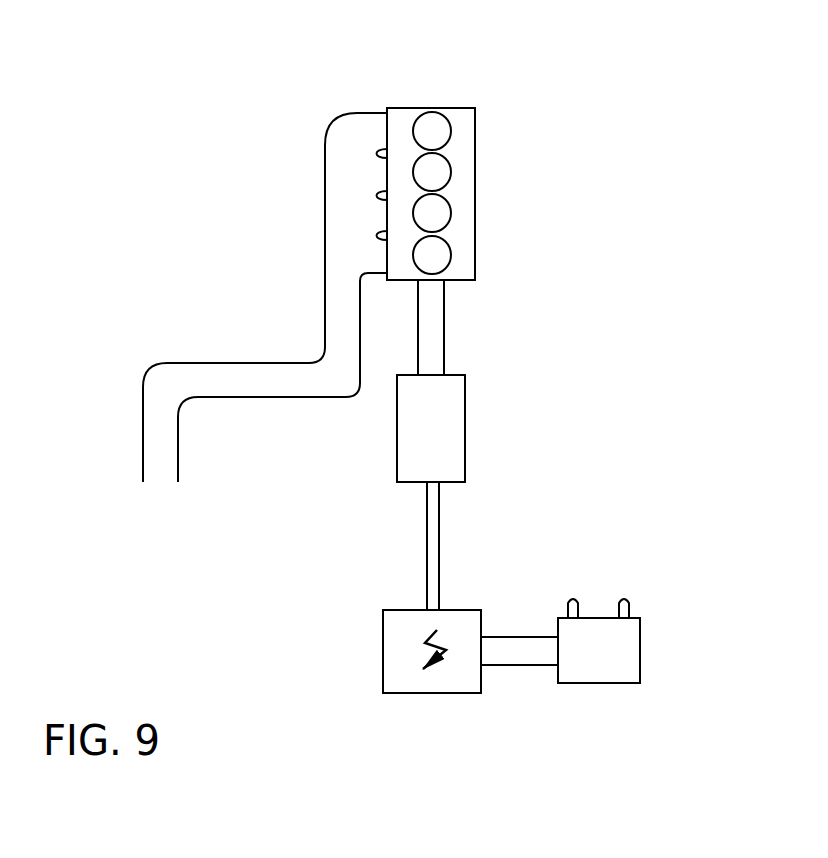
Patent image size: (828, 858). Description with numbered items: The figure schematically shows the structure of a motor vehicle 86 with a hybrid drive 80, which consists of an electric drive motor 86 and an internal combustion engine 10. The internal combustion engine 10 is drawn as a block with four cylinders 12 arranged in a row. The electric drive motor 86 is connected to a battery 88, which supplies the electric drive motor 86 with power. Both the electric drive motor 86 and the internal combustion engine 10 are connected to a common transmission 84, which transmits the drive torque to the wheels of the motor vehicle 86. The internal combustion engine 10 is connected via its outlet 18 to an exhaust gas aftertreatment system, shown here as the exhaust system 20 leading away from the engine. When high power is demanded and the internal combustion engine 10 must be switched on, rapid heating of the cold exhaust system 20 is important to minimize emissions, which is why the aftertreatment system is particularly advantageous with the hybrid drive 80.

The internal combustion engine 10 is at (474, 139).
The cylinders 12 is at (413, 131).
The outlet 18 is at (345, 205).
The exhaust system 20 is at (168, 340).
The hybrid drive 80 is at (607, 230).
The common transmission 84 is at (464, 433).
The electric drive motor 86 is at (383, 652).
The battery 88 is at (638, 657).